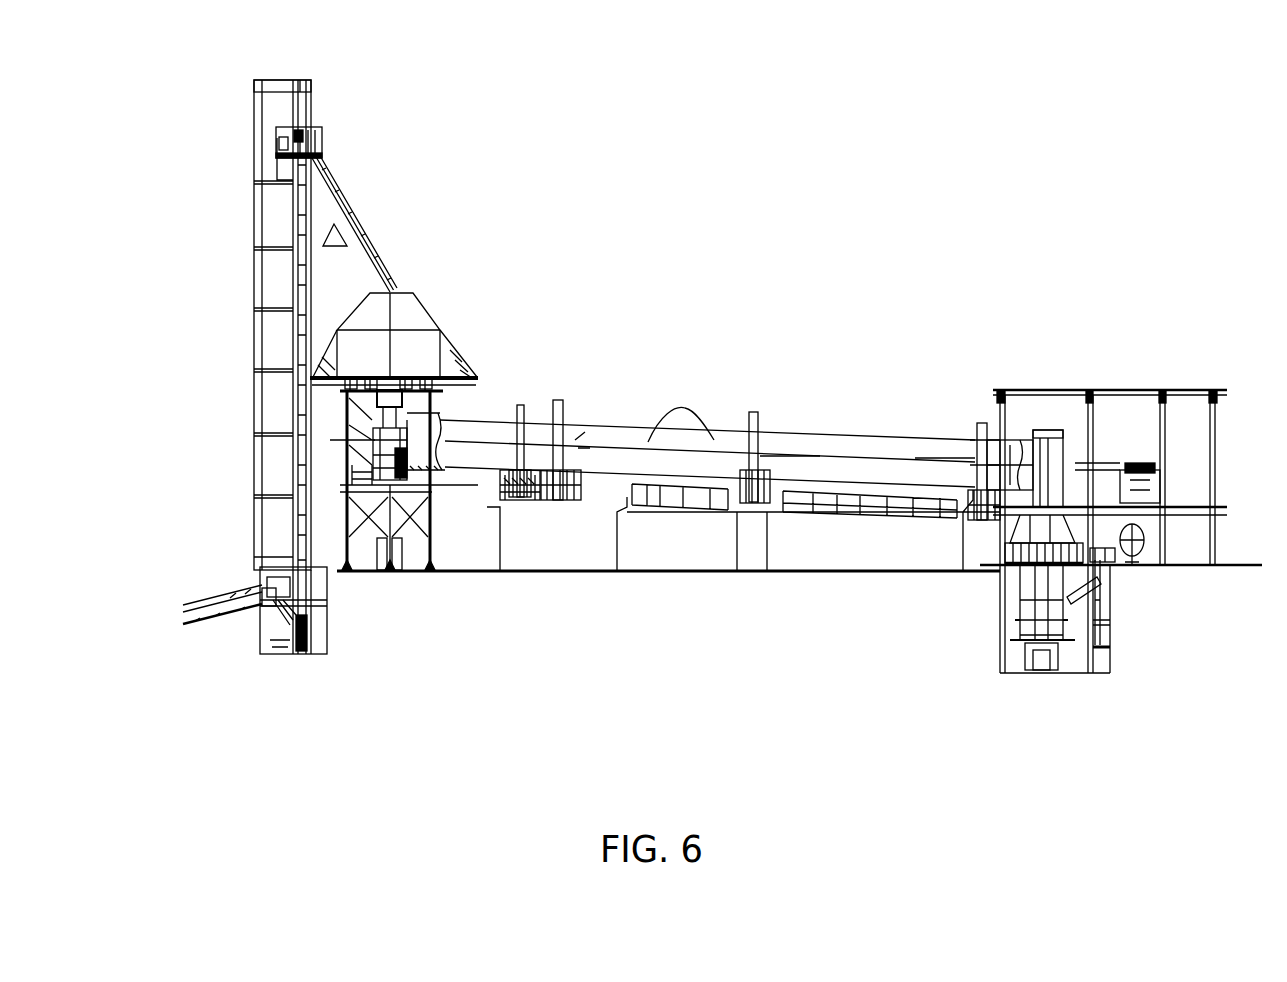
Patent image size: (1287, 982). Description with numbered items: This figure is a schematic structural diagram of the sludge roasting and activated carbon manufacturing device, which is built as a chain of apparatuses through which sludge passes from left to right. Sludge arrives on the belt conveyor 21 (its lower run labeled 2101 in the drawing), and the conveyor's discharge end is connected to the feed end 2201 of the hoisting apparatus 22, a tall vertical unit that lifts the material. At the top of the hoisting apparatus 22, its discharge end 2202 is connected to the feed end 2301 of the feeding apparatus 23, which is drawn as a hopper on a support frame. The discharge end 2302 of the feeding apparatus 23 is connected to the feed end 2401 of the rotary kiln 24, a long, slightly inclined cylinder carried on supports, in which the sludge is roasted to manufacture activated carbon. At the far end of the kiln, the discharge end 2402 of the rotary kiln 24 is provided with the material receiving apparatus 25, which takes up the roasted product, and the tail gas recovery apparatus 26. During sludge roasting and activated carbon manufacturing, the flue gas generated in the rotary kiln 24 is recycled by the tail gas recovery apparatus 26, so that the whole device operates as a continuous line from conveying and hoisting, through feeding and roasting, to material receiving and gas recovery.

The belt conveyor 21 is at (202, 600).
The conveyor belt 2101 is at (242, 617).
The hoisting apparatus 22 is at (310, 260).
The feed end of the hoisting apparatus 2201 is at (315, 620).
The discharge end of the hoisting apparatus 2202 is at (312, 122).
The feeding apparatus 23 is at (410, 297).
The feed end of the feeding apparatus 2301 is at (355, 213).
The discharge end of the feeding apparatus 2302 is at (410, 400).
The rotary kiln 24 is at (650, 440).
The feed end of the rotary kiln 2401 is at (520, 503).
The discharge end of the rotary kiln 2402 is at (976, 434).
The material receiving apparatus 25 is at (1068, 500).
The tail gas recovery apparatus 26 is at (1100, 557).